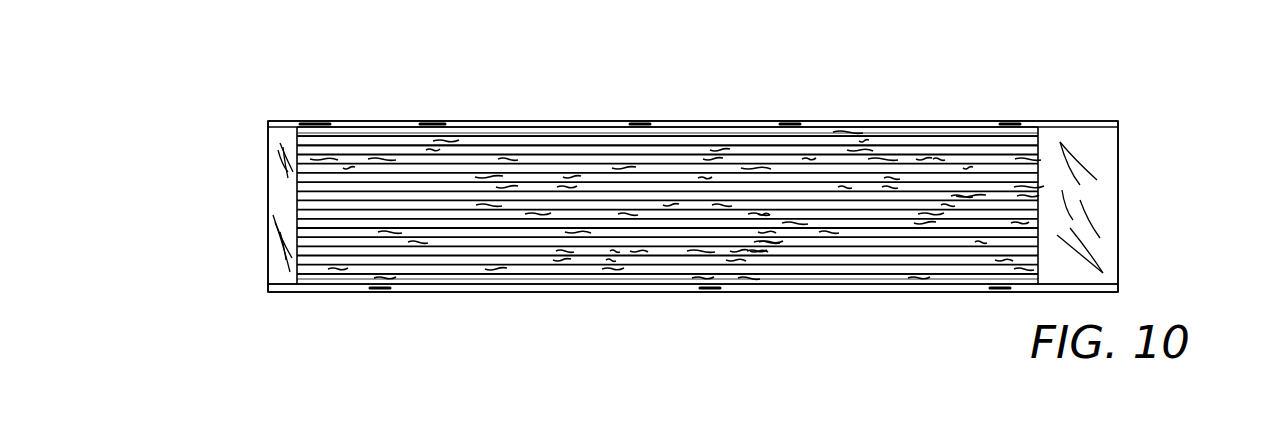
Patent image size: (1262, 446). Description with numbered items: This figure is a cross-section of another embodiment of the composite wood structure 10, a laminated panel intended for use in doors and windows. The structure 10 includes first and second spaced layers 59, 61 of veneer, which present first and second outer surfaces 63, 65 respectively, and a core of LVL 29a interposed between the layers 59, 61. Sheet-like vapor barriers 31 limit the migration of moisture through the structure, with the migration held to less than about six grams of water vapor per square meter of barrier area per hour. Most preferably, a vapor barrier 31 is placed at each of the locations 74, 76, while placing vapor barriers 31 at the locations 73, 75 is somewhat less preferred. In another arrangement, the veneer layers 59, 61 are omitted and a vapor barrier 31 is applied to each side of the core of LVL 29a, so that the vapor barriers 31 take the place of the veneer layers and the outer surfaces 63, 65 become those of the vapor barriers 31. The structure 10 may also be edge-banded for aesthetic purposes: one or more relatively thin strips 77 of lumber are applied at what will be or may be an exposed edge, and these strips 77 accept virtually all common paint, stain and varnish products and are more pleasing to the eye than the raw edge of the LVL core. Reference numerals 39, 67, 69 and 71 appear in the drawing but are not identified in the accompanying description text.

The composite wood structure 10 is at (1048, 93).
The LVL 29a is at (707, 173).
The vapor barrier 31 is at (415, 120).
The adhesive layer 39 is at (333, 138).
The first layer of veneer 59 is at (1118, 123).
The second layer of veneer 61 is at (1115, 289).
The first outer surface 63 is at (885, 122).
The second outer surface 65 is at (850, 292).
The upper skin 67 is at (557, 120).
The lower skin 69 is at (415, 287).
The torn fiber portion 71 is at (277, 178).
The location 73 is at (285, 148).
The location 74 is at (492, 135).
The location 75 is at (268, 270).
The location 76 is at (350, 278).
The strip of lumber 77 is at (277, 212).